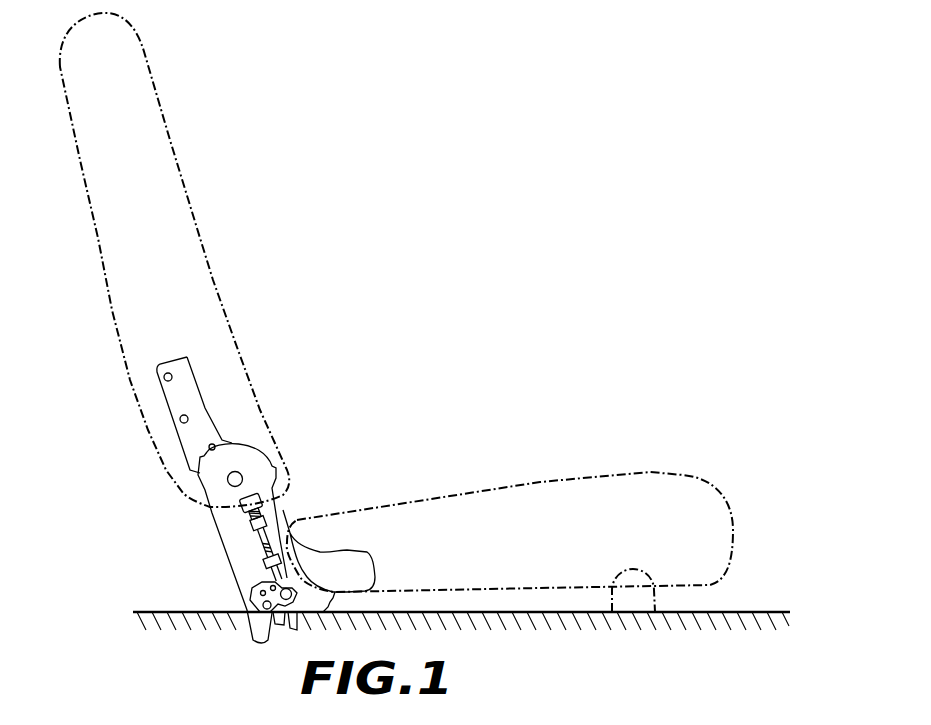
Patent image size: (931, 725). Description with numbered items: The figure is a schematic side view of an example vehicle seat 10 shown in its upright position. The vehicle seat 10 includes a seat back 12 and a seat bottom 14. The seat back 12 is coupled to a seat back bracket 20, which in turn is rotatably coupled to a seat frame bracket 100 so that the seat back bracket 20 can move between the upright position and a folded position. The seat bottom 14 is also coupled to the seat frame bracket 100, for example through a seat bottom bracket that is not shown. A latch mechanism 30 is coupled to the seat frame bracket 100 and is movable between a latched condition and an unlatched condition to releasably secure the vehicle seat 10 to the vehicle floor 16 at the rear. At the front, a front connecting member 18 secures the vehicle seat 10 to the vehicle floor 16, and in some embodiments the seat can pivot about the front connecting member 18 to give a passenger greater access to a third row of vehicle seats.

The vehicle seat 10 is at (565, 153).
The seat back 12 is at (148, 65).
The seat bottom 14 is at (655, 472).
The vehicle floor 16 is at (757, 612).
The front connecting member 18 is at (633, 595).
The seat back bracket 20 is at (170, 393).
The latch mechanism 30 is at (228, 604).
The seat frame bracket 100 is at (212, 527).